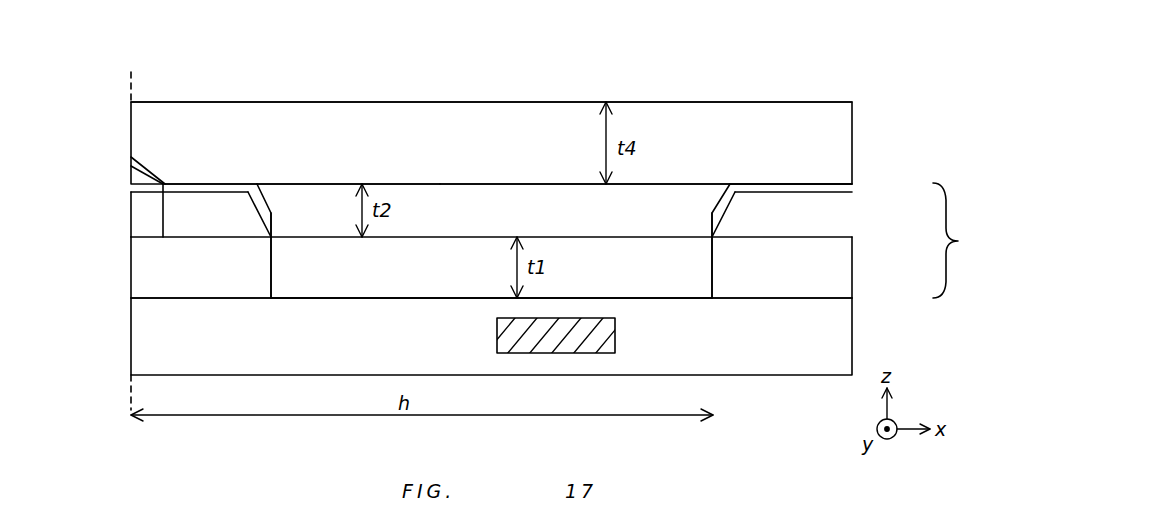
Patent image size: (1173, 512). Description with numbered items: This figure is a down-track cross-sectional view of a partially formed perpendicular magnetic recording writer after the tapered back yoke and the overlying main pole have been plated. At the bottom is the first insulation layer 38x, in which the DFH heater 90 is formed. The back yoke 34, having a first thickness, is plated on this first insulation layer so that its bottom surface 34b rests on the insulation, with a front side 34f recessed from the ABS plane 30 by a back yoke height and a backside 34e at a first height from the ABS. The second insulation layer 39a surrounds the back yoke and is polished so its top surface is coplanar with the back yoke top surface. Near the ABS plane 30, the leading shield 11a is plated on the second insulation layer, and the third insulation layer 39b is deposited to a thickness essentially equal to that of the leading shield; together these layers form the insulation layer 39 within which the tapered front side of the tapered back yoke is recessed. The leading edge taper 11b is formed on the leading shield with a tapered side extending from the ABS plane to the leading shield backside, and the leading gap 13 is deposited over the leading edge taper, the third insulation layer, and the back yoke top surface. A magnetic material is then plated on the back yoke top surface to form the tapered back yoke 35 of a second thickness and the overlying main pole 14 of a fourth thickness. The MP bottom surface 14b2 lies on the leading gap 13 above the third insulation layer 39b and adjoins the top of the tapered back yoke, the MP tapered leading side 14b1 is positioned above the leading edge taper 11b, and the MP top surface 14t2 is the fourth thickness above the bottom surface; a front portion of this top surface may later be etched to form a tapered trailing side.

The main pole (MP) 14 is at (840, 142).
The MP top surface 14t2 is at (373, 102).
The MP tapered leading side 14b1 is at (155, 176).
The MP bottom surface 14b2 is at (541, 184).
The leading gap 13 is at (137, 162).
The leading edge taper (LET) 11b is at (137, 184).
The leading shield (LS) 11a is at (147, 212).
The third insulation layer 39b is at (178, 227).
The second insulation layer 39a is at (146, 273).
The insulation layer 39 is at (961, 240).
The tapered back yoke (tBY) 35 is at (461, 212).
The back yoke (BY) 34 is at (667, 277).
The BY front side 34f is at (271, 255).
The BY bottom surface 34b is at (345, 298).
The BY backside 34e is at (713, 272).
The first insulation layer 38x is at (837, 338).
The DFH heater 90 is at (560, 338).
The ABS plane 30 is at (130, 250).